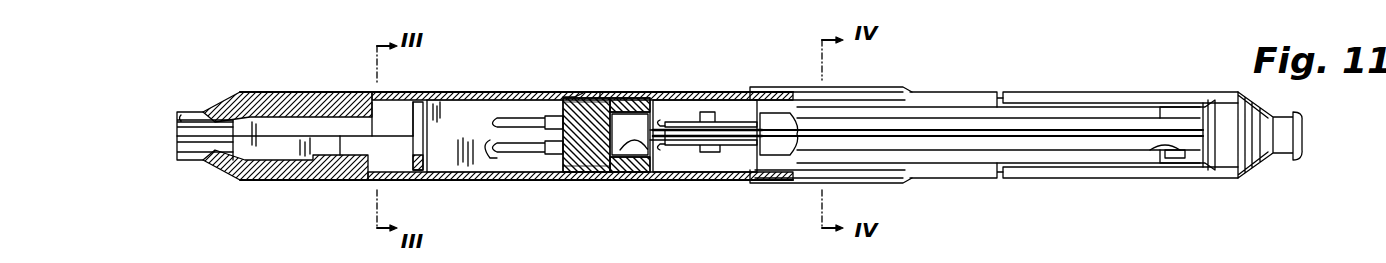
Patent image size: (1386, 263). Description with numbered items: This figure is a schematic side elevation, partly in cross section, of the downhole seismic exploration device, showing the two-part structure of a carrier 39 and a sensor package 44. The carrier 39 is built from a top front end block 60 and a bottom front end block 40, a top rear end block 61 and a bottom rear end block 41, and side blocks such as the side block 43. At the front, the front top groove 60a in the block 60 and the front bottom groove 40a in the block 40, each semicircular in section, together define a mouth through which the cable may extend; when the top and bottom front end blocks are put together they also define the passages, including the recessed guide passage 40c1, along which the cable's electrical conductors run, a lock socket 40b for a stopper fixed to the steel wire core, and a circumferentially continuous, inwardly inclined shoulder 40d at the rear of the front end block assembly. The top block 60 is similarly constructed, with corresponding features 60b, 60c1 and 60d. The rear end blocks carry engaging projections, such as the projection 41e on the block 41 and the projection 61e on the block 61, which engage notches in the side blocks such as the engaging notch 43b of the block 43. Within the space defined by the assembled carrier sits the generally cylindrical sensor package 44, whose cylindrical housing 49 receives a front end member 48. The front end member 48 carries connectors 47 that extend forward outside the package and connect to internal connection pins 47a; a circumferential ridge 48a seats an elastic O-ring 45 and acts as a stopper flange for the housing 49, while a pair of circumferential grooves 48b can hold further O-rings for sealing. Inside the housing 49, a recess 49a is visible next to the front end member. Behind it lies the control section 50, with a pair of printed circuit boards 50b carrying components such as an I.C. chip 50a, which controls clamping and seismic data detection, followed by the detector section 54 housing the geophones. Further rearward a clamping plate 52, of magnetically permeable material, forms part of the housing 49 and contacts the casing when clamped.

The carrier 39 is at (460, 192).
The bottom front end block 40 is at (217, 172).
The front bottom groove 40a is at (178, 145).
The lock socket 40b is at (412, 178).
The recessed guide passage 40c1 is at (273, 183).
The inclined shoulder 40d is at (585, 180).
The bottom rear end block 41 is at (1257, 170).
The engaging projection 41e is at (1183, 160).
The side block 43 is at (973, 150).
The engaging notch 43b is at (1160, 152).
The sensor package 44 is at (968, 90).
The elastic O-ring 45 is at (577, 95).
The connectors 47 is at (520, 178).
The internal connection pins 47a is at (645, 178).
The front end member 48 is at (570, 180).
The circumferential ridge 48a is at (590, 97).
The circumferential grooves 48b is at (617, 97).
The cylindrical housing 49 is at (622, 178).
The spacer recess 49a is at (607, 178).
The control section 50 is at (670, 180).
The I.C. chip 50a is at (740, 90).
The printed circuit boards 50b is at (682, 120).
The clamping plate 52 is at (882, 89).
The detector section 54 is at (780, 148).
The top front end block 60 is at (252, 89).
The front top groove 60a is at (178, 127).
The upper housing partition 60b is at (410, 118).
The upper housing groove 60c1 is at (320, 118).
The upper housing shoulder 60d is at (570, 97).
The top rear end block 61 is at (1110, 90).
The engaging projection 61e is at (1160, 117).